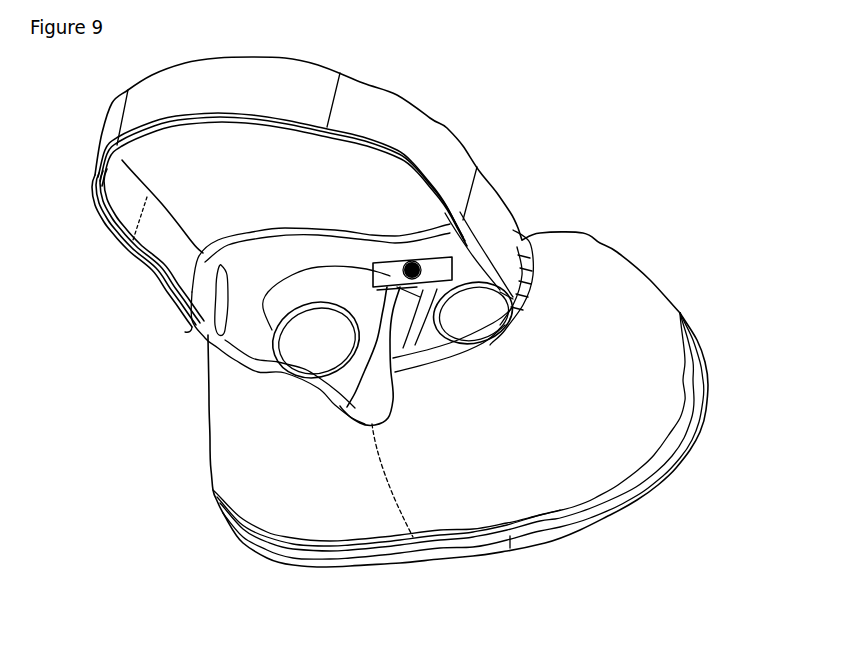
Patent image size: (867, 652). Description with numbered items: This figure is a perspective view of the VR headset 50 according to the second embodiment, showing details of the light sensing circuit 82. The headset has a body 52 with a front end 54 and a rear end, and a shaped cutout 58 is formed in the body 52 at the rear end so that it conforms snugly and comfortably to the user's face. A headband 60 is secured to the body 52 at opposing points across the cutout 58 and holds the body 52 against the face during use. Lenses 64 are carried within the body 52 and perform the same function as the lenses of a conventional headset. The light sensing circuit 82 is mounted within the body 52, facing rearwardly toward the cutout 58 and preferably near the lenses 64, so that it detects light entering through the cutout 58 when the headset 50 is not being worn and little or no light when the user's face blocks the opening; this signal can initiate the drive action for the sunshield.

The VR headset 50 is at (672, 154).
The body 52 is at (617, 420).
The front end 54 is at (493, 550).
The shaped cutout 58 is at (343, 420).
The headband 60 is at (388, 117).
The lenses 64 is at (307, 343).
The light sensing circuit 82 is at (400, 263).